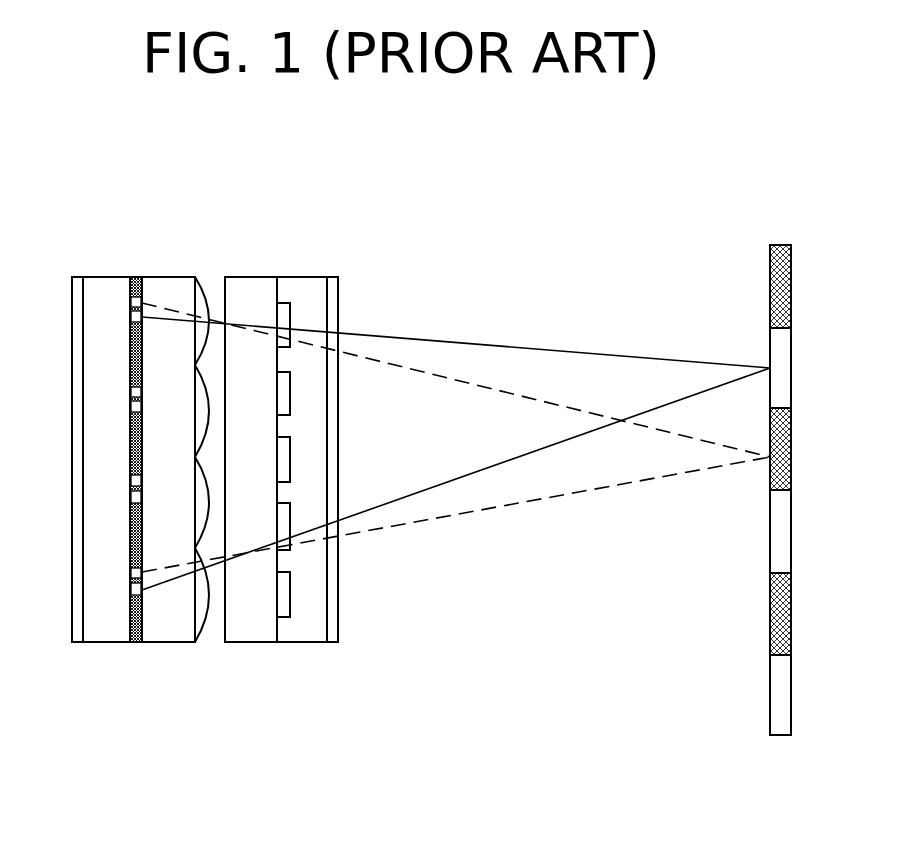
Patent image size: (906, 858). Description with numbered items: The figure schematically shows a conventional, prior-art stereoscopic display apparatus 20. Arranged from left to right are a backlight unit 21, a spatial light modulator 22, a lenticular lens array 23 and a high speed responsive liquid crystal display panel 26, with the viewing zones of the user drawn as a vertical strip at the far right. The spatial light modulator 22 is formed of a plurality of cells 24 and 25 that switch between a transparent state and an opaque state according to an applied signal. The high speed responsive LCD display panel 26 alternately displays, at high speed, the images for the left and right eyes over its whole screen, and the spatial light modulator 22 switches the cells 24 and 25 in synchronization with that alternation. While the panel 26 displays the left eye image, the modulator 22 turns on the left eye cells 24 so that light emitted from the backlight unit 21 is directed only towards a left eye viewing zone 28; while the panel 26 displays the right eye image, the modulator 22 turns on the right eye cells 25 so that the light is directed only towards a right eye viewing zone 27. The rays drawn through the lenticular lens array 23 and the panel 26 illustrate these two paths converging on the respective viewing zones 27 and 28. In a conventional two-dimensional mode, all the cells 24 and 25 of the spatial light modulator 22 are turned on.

The stereoscopic display apparatus 20 is at (213, 717).
The backlight unit 21 is at (77, 277).
The spatial light modulator 22 is at (110, 277).
The lenticular lens array 23 is at (208, 315).
The left eye cells 24 is at (133, 572).
The right eye cells 25 is at (133, 590).
The high speed responsive liquid crystal display panel 26 is at (262, 278).
The right eye viewing zone 27 is at (770, 349).
The left eye viewing zone 28 is at (770, 468).